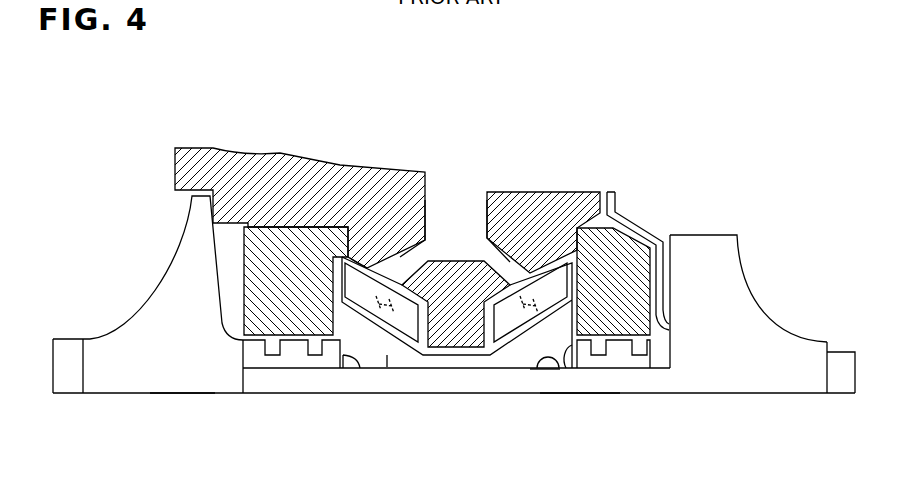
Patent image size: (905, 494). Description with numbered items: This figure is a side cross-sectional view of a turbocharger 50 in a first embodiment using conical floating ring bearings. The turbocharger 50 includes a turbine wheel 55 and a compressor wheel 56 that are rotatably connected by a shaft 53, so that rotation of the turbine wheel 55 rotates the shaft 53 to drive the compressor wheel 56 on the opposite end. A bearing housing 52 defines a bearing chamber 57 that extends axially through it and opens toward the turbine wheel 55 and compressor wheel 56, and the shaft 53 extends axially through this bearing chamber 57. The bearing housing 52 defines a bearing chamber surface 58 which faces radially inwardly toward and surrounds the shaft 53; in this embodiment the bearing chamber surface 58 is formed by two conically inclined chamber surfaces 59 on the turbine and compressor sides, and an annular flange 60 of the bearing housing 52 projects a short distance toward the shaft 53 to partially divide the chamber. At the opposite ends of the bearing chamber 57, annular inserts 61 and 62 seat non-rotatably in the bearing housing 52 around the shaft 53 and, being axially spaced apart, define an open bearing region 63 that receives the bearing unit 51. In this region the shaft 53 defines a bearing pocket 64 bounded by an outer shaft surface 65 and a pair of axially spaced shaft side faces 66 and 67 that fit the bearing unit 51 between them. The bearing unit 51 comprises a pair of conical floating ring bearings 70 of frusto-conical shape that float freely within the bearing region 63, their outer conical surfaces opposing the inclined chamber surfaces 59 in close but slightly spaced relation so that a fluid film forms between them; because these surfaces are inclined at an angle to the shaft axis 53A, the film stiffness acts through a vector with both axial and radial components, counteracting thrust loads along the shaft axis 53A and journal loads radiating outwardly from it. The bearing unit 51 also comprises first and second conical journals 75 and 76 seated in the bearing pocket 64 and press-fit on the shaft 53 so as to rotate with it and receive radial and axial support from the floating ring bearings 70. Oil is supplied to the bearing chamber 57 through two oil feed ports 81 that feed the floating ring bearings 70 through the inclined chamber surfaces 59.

The turbocharger 50 is at (179, 140).
The bearing unit 51 is at (428, 374).
The bearing housing 52 is at (293, 180).
The shaft 53 is at (575, 383).
The shaft axis 53A is at (182, 395).
The turbine wheel 55 is at (730, 303).
The compressor wheel 56 is at (112, 378).
The bearing chamber 57 is at (603, 228).
The bearing chamber surface 58 is at (533, 265).
The inclined chamber surfaces 59 is at (367, 266).
The annular flange 60 is at (465, 365).
The annular insert 61 is at (630, 245).
The annular insert 62 is at (258, 253).
The bearing region 63 is at (490, 288).
The bearing pocket 64 is at (542, 376).
The outer shaft surface 65 is at (560, 366).
The shaft side face 66 is at (360, 367).
The shaft side face 67 is at (572, 368).
The conical floating ring bearings 70 is at (412, 328).
The first conical journal 75 is at (387, 357).
The second conical journal 76 is at (522, 355).
The oil feed ports 81 is at (412, 262).